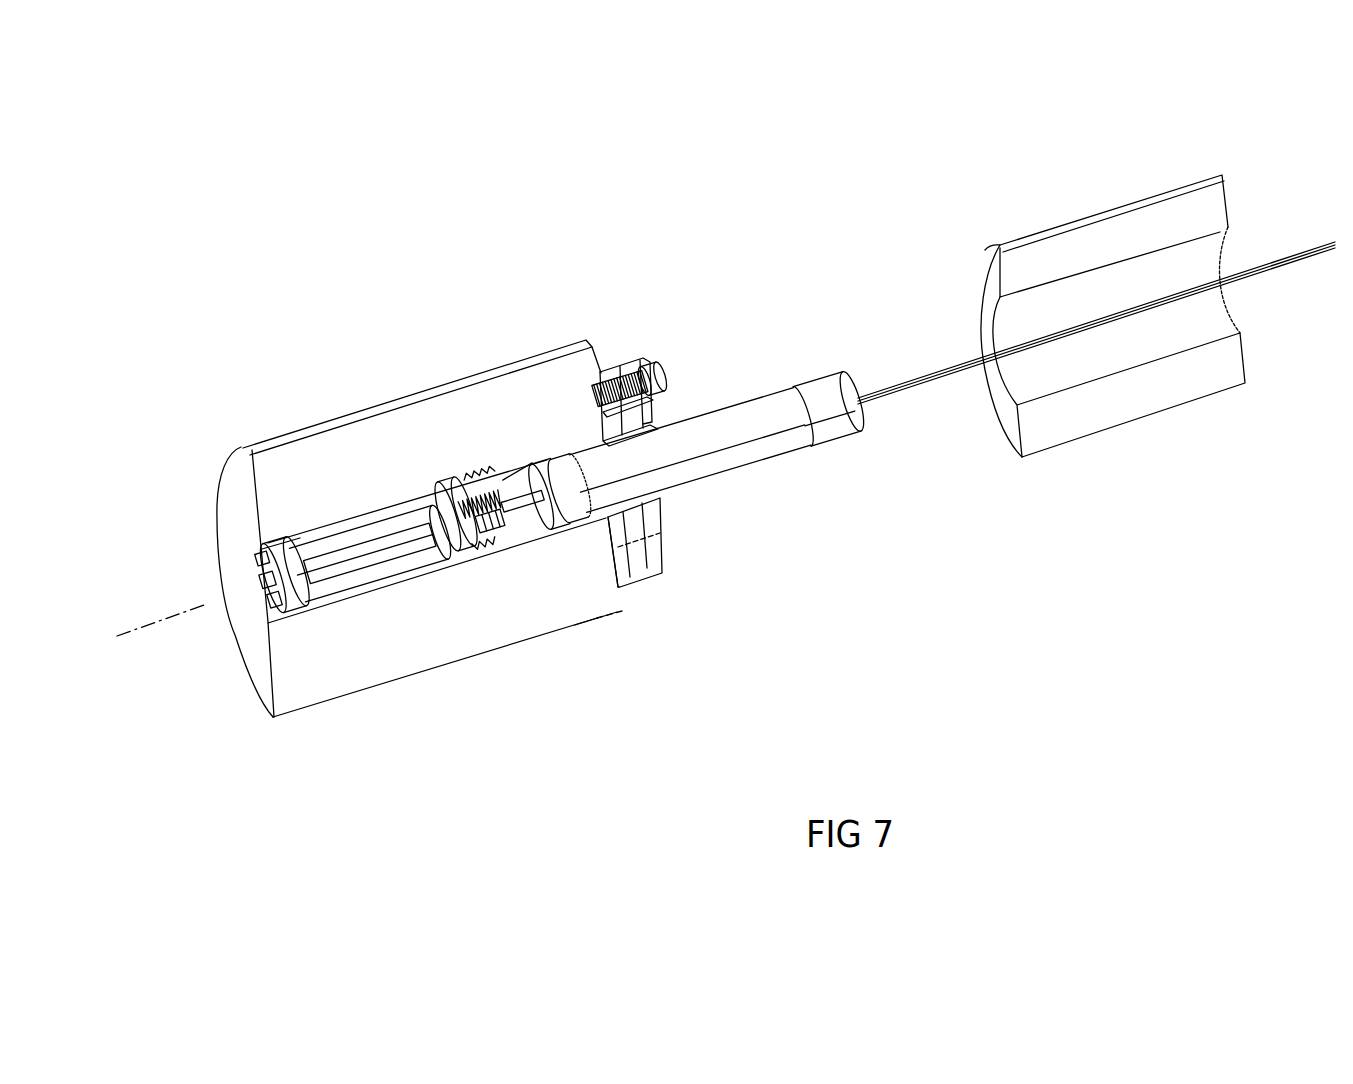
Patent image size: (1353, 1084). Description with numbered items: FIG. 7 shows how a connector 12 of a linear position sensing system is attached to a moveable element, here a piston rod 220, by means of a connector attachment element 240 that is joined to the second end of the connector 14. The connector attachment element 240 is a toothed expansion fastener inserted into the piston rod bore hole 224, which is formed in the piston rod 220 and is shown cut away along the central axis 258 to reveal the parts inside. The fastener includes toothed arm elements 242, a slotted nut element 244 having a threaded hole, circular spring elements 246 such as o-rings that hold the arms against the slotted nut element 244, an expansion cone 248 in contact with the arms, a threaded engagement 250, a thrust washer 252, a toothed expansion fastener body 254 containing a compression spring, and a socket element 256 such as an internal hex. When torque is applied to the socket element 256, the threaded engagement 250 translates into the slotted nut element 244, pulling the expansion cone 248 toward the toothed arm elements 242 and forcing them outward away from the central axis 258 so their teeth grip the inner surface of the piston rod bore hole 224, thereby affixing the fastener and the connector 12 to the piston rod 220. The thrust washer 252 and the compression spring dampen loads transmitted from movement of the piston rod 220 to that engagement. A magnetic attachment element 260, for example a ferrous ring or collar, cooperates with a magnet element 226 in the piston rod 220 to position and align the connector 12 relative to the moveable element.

The connector 12 is at (932, 377).
The second end of the connector 14 is at (767, 384).
The piston rod 220 is at (252, 448).
The piston rod bore hole 224 is at (408, 495).
The magnet element 226 is at (622, 360).
The connector attachment element 240 is at (707, 404).
The toothed arm elements 242 is at (498, 523).
The slotted nut element 244 is at (357, 533).
The circular spring elements 246 is at (313, 597).
The expansion cone 248 is at (553, 473).
The threaded engagement 250 is at (478, 503).
The thrust washer 252 is at (577, 520).
The toothed expansion fastener body 254 is at (735, 472).
The socket element 256 is at (823, 380).
The central axis 258 is at (157, 613).
The magnetic attachment element 260 is at (645, 505).